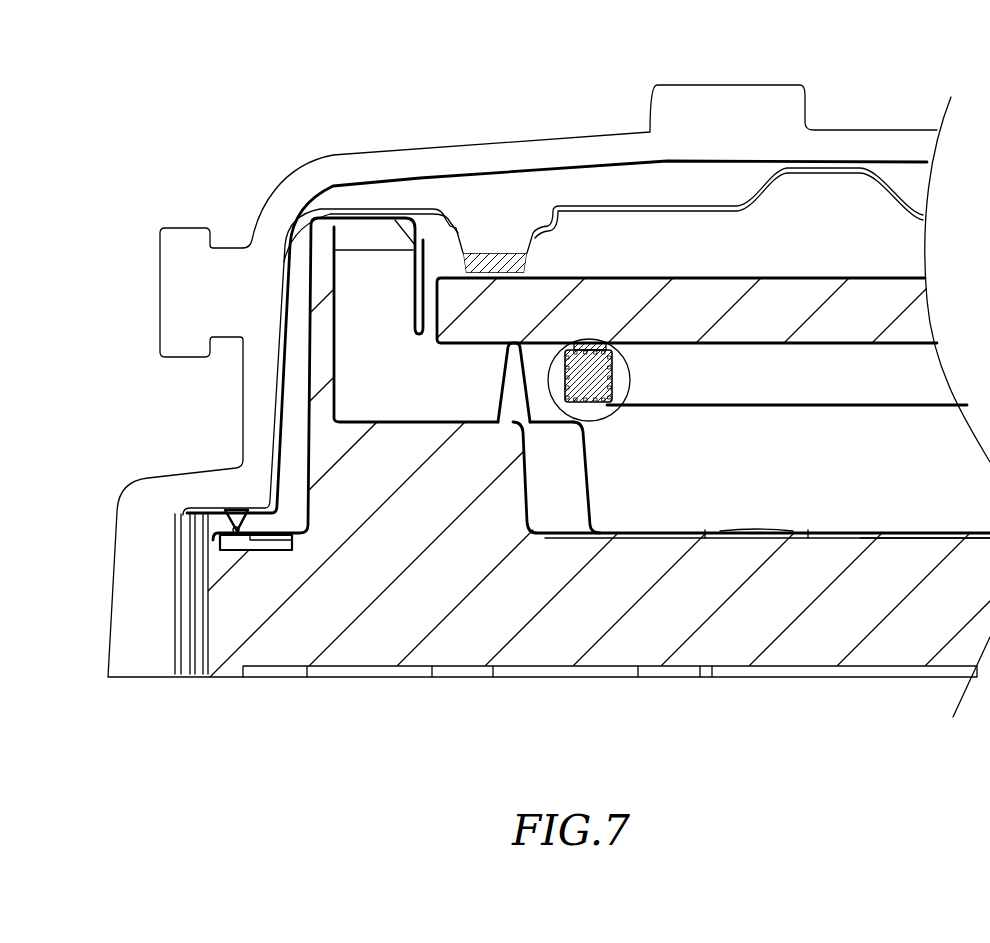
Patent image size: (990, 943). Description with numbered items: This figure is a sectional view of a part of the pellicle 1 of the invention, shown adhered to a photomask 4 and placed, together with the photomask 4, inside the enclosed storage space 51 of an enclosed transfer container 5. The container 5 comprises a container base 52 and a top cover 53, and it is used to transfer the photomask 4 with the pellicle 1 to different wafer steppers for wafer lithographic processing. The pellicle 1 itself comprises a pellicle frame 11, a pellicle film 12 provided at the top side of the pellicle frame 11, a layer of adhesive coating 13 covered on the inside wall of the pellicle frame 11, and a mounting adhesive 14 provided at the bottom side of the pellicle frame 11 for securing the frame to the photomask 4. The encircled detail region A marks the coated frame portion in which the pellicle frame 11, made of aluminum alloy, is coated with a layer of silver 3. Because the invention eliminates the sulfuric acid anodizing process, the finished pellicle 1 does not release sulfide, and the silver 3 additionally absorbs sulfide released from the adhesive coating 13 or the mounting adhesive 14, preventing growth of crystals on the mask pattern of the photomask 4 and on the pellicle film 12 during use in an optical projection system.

The pellicle 1 is at (655, 378).
The silver 3 is at (568, 383).
The photomask 4 is at (463, 293).
The enclosed transfer container 5 is at (686, 66).
The pellicle frame 11 is at (610, 405).
The pellicle film 12 is at (777, 405).
The adhesive coating 13 is at (618, 350).
The mounting adhesive 14 is at (568, 347).
The enclosed storage space 51 is at (883, 510).
The container base 52 is at (397, 622).
The top cover 53 is at (272, 228).
The detail region A is at (595, 343).